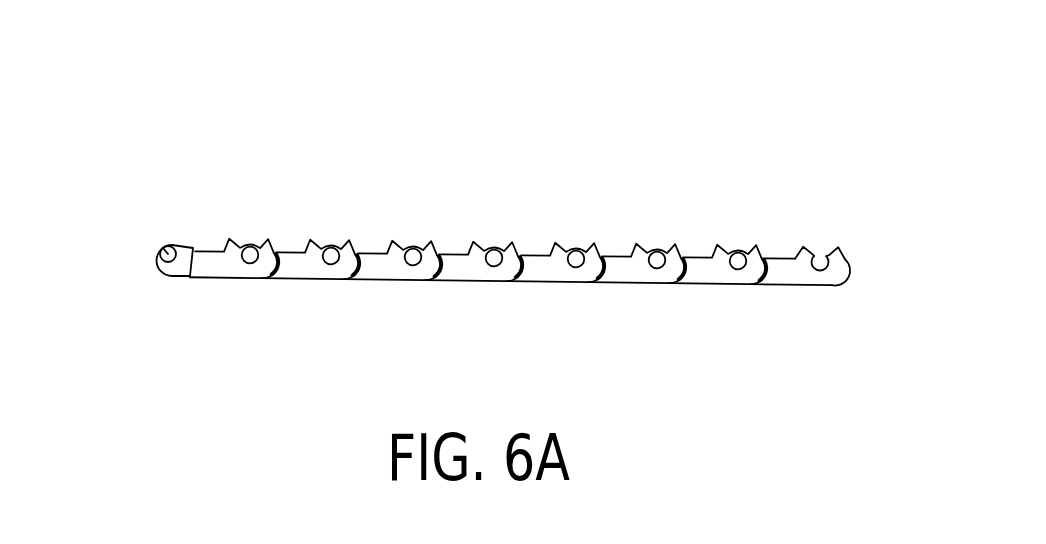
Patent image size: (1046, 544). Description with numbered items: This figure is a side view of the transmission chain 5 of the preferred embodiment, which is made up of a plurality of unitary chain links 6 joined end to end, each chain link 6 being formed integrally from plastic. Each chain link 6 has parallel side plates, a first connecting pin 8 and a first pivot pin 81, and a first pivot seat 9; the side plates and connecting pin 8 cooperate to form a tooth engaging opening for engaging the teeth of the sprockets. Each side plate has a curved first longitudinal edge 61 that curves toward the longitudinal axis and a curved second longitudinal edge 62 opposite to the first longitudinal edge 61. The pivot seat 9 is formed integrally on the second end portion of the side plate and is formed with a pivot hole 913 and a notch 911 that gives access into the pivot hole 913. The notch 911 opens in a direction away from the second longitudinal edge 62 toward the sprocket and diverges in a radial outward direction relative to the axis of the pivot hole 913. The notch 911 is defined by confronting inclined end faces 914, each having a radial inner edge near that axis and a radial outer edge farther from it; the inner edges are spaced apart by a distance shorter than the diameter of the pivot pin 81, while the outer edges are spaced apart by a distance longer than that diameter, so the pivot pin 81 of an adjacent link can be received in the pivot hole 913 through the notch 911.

The transmission chain 5 is at (612, 213).
The chain link 6 is at (533, 228).
The first longitudinal edge 61 is at (772, 255).
The second longitudinal edge 62 is at (767, 282).
The first connecting pin 8 is at (162, 214).
The first pivot pin 81 is at (160, 245).
The first pivot seat 9 is at (872, 261).
The notch 911 is at (822, 257).
The pivot hole 913 is at (837, 282).
The inclined end face 914 is at (815, 251).